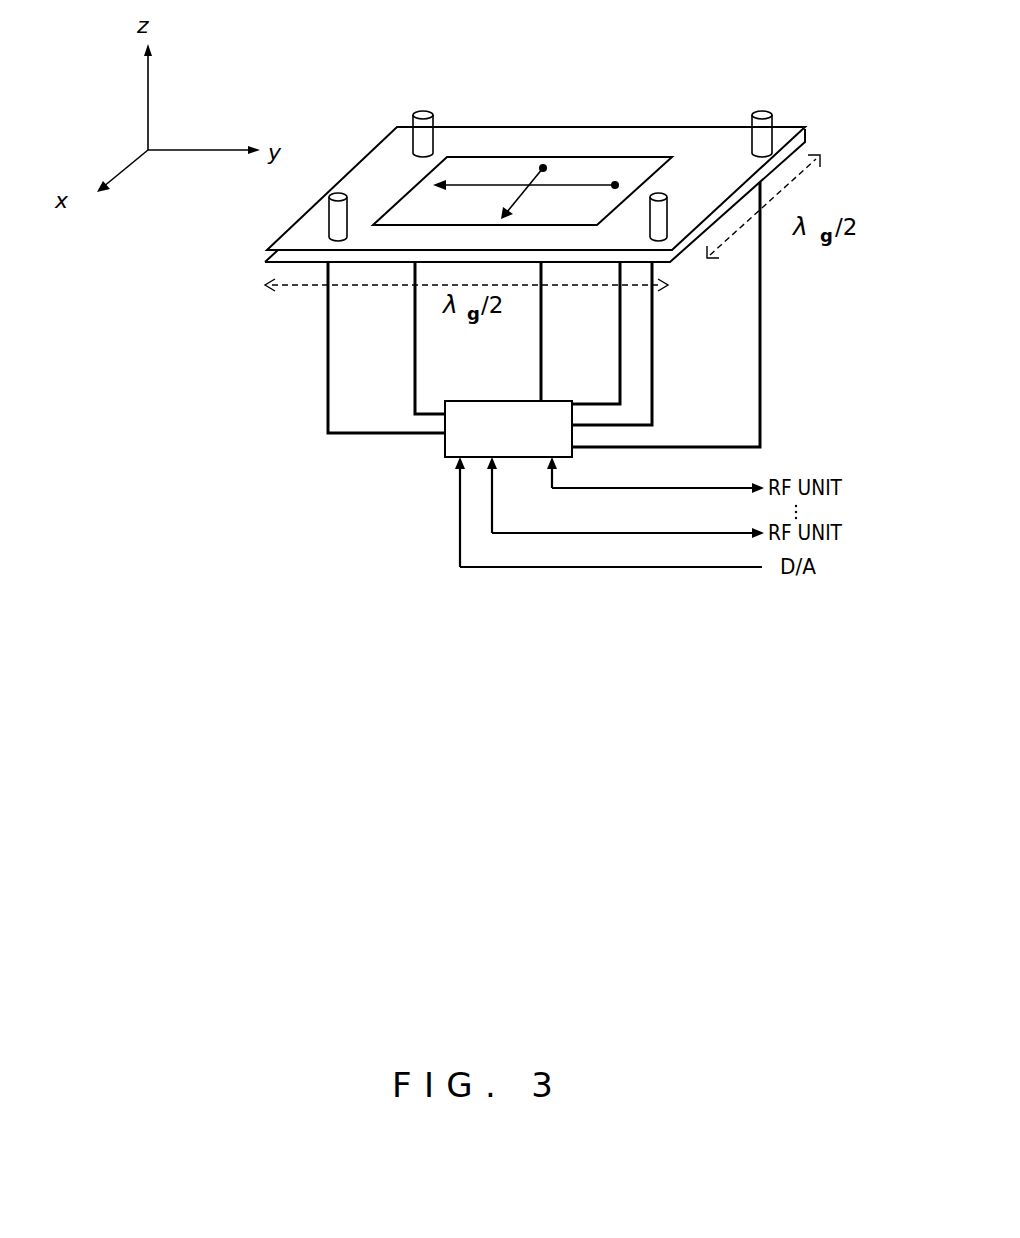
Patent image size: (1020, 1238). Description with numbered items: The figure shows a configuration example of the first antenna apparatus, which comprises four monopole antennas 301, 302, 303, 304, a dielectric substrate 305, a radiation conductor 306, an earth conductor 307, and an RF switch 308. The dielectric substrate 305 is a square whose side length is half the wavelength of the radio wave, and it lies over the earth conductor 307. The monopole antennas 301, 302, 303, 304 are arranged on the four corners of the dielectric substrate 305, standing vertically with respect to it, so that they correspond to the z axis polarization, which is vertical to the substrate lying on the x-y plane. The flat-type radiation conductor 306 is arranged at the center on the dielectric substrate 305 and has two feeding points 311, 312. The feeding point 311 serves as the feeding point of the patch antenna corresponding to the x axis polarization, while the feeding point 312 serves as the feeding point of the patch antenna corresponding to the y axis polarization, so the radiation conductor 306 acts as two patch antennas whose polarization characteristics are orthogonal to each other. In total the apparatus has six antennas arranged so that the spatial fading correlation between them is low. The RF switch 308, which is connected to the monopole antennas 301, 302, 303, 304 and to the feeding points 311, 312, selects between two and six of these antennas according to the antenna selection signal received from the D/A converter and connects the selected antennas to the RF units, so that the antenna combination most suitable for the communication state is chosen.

The monopole antenna 301 is at (329, 212).
The monopole antenna 302 is at (422, 110).
The monopole antenna 303 is at (763, 110).
The monopole antenna 304 is at (661, 194).
The dielectric substrate 305 is at (268, 249).
The radiation conductor 306 is at (415, 188).
The earth conductor 307 is at (263, 265).
The RF switch 308 is at (443, 442).
The feeding point 311 is at (543, 168).
The feeding point 312 is at (615, 185).